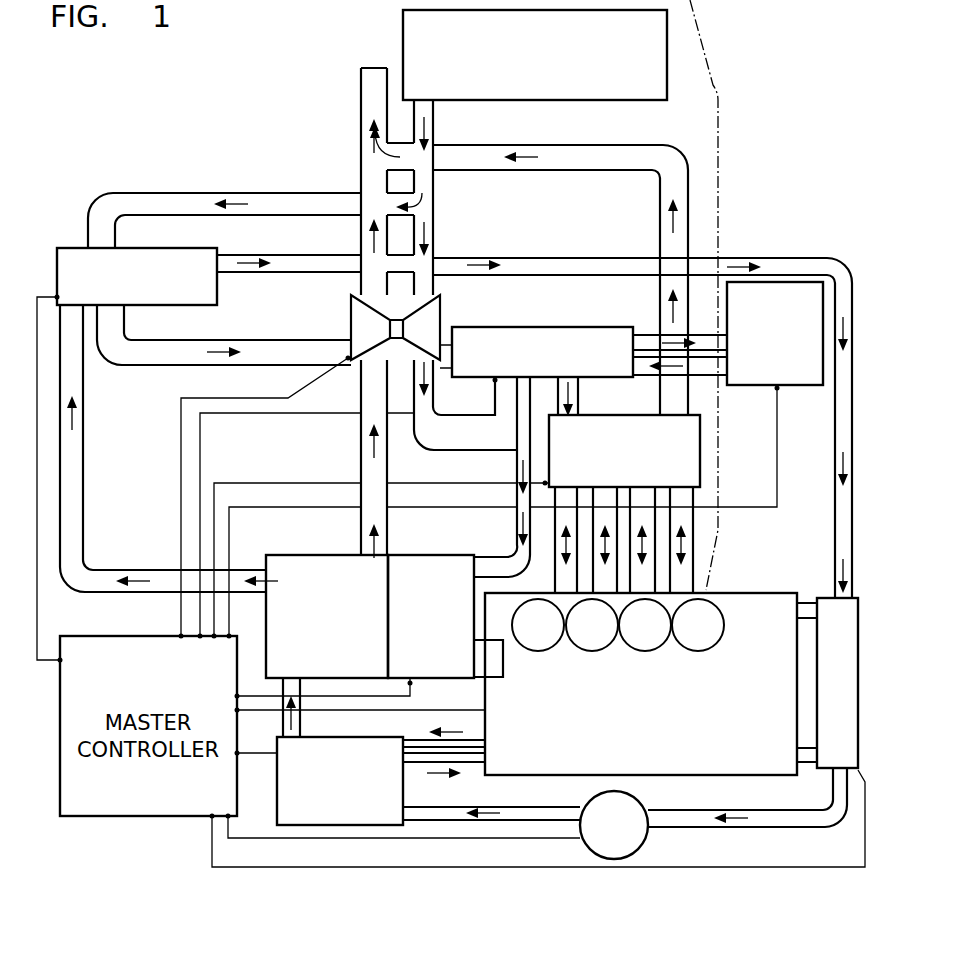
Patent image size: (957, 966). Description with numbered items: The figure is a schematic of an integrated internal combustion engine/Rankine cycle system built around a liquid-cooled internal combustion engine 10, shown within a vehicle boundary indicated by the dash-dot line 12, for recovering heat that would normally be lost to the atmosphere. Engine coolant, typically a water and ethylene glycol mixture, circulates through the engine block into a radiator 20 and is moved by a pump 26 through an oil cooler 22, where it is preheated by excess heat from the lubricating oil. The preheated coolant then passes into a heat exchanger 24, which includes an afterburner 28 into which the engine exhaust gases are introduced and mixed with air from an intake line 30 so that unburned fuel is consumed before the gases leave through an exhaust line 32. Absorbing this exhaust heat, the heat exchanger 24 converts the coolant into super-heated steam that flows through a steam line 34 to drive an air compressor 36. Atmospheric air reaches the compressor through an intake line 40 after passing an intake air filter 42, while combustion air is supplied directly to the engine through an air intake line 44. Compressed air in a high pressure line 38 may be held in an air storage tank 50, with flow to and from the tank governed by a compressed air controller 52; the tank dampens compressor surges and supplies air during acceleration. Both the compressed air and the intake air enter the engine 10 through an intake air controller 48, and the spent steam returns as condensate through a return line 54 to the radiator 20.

The internal combustion engine 10 is at (745, 586).
The vehicle boundary 12 is at (725, 295).
The radiator 20 is at (821, 698).
The oil cooler 22 is at (321, 791).
The heat exchanger 24 is at (306, 626).
The pump 26 is at (597, 838).
The afterburner 28 is at (413, 626).
The intake line 30 is at (513, 470).
The exhaust line 32 is at (361, 112).
The steam line 34 is at (84, 432).
The air compressor 36 is at (120, 290).
The high pressure line 38 is at (277, 340).
The intake line 40 is at (210, 192).
The intake air filter 42 is at (523, 67).
The air intake line 44 is at (437, 243).
The intake air controller 48 is at (606, 464).
The air storage tank 50 is at (758, 341).
The compressed air controller 52 is at (528, 363).
The return line 54 is at (792, 258).